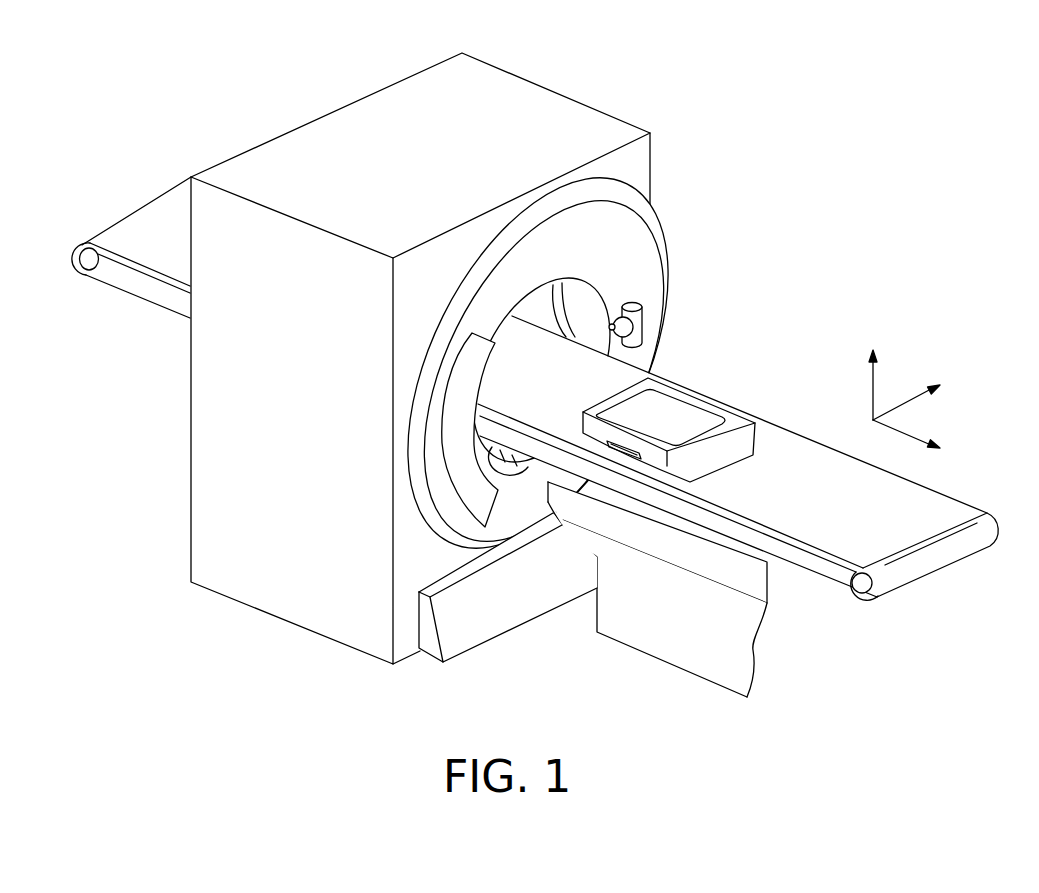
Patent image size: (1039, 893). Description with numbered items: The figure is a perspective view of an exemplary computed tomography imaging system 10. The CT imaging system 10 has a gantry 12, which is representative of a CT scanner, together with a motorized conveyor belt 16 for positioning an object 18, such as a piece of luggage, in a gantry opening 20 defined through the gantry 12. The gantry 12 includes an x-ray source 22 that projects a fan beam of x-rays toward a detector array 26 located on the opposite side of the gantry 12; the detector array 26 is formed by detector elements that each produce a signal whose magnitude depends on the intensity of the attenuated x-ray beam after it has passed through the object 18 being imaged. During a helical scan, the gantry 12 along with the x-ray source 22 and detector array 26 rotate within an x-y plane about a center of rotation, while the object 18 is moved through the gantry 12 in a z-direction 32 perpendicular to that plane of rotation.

The CT imaging system 10 is at (848, 266).
The gantry 12 is at (628, 242).
The motorized conveyor belt 16 is at (742, 552).
The object 18 is at (673, 418).
The gantry opening 20 is at (563, 303).
The x-ray source 22 is at (640, 317).
The detector array 26 is at (462, 450).
The z-direction 32 is at (903, 428).